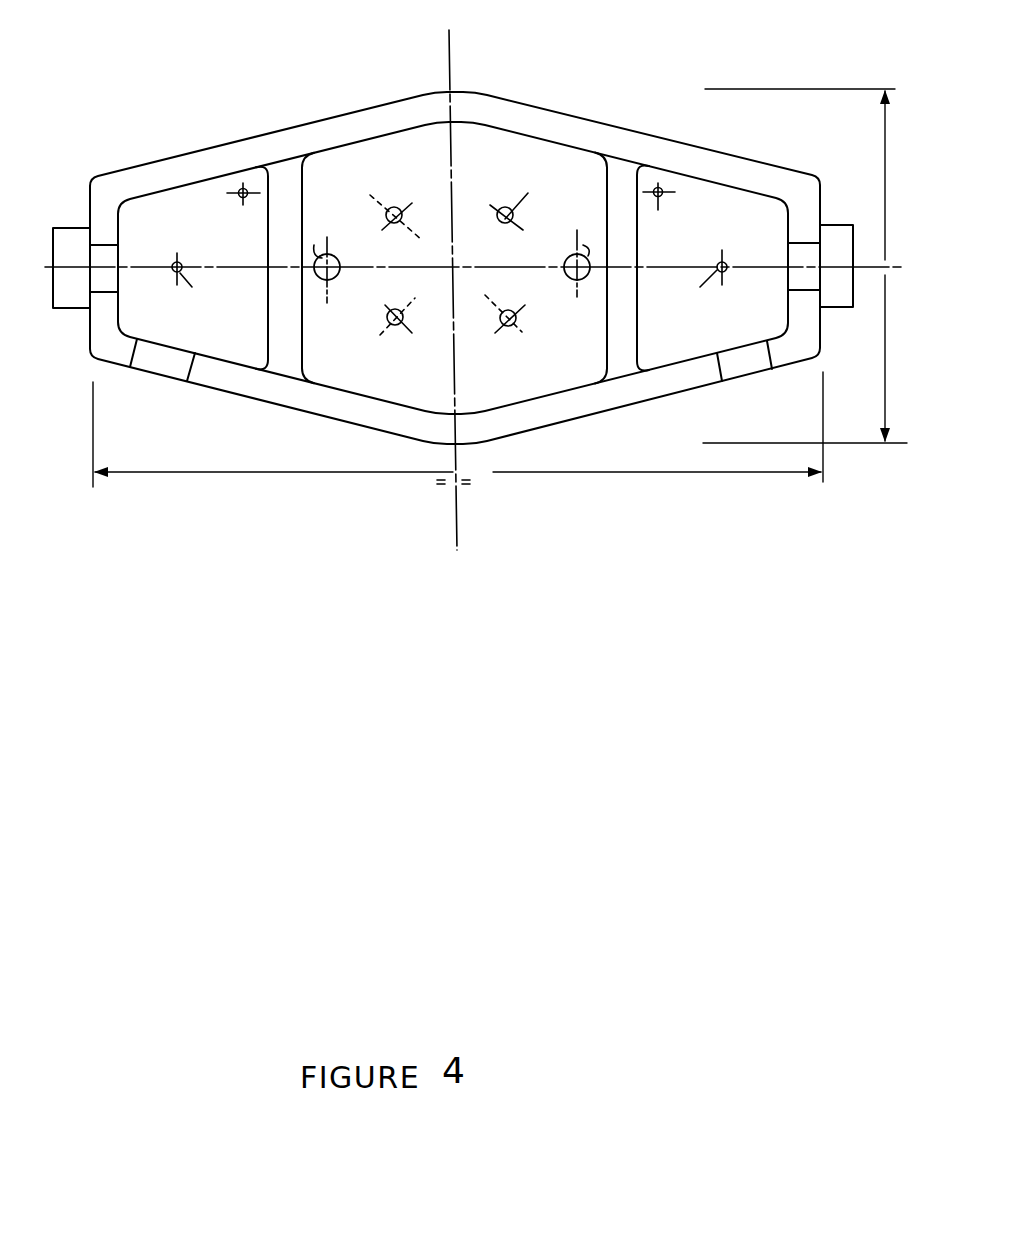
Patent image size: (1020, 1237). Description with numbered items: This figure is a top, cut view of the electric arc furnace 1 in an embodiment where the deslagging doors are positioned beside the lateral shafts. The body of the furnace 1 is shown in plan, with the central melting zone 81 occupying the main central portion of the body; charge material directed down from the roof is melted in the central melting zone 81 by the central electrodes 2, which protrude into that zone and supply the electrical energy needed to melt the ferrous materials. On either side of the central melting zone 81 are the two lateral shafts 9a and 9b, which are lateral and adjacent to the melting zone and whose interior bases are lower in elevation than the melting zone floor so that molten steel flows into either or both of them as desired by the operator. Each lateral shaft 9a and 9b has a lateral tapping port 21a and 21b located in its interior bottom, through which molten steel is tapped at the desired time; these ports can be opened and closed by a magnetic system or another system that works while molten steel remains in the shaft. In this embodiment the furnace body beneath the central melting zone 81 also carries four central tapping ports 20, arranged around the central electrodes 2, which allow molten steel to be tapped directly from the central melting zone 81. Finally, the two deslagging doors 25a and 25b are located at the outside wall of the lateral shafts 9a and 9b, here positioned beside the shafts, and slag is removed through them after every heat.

The electric arc furnace 1 is at (488, 268).
The central electrodes 2 is at (326, 264).
The lateral shaft 9a is at (187, 224).
The lateral shaft 9b is at (679, 230).
The central tapping ports 20 is at (406, 319).
The lateral tapping port 21a is at (249, 184).
The lateral tapping port 21b is at (662, 186).
The deslagging door 25a is at (157, 359).
The deslagging door 25b is at (732, 367).
The central melting zone 81 is at (519, 182).